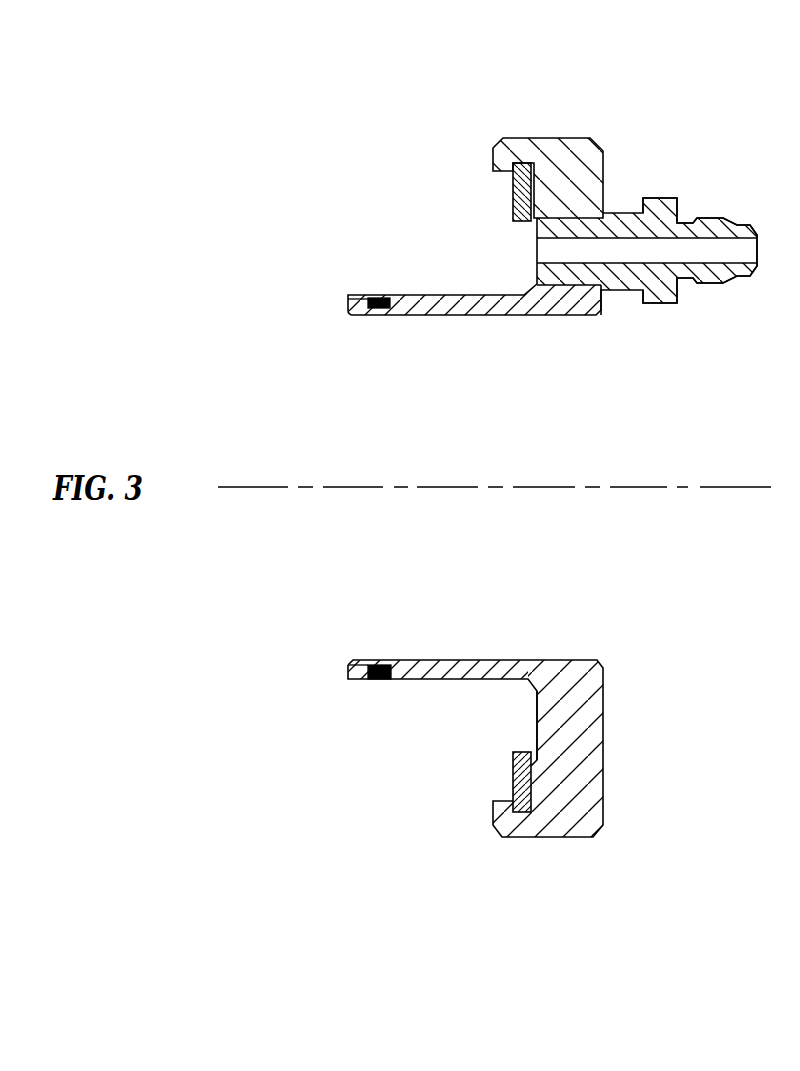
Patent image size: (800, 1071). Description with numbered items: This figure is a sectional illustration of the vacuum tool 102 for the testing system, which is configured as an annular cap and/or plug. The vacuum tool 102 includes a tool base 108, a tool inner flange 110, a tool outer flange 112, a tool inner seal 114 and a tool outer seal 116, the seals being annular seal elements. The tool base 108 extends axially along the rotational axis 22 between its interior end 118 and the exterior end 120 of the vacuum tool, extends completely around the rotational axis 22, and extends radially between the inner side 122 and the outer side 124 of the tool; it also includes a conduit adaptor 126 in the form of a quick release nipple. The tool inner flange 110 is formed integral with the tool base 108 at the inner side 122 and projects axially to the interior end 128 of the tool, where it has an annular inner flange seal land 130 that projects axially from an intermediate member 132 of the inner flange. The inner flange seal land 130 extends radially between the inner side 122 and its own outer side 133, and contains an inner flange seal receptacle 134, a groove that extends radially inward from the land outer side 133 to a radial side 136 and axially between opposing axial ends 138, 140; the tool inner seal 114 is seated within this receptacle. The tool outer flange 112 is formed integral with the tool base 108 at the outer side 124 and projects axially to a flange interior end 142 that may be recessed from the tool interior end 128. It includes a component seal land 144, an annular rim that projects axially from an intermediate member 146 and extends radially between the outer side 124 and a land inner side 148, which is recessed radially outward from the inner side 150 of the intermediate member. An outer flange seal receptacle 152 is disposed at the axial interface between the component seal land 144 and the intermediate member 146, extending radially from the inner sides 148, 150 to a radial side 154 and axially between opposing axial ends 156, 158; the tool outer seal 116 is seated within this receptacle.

The rotational axis 22 is at (757, 488).
The vacuum tool 102 is at (506, 477).
The tool base 108 is at (506, 495).
The tool inner flange 110 is at (467, 340).
The tool outer flange 112 is at (534, 482).
The tool inner seal 114 is at (377, 296).
The tool outer seal 116 is at (511, 200).
The interior end of the tool base 118 is at (537, 722).
The exterior end of the vacuum tool 120 is at (604, 695).
The inner side of the vacuum tool 122 is at (571, 316).
The outer side of the vacuum tool 124 is at (506, 136).
The conduit adaptor 126 is at (700, 302).
The interior end of the vacuum tool 128 is at (348, 672).
The inner flange seal land 130 is at (372, 320).
The intermediate member of the tool inner flange 132 is at (481, 320).
The outer side of the inner flange seal land 133 is at (352, 296).
The inner flange seal receptacle 134 is at (392, 296).
The radial side of the inner flange seal receptacle 136 is at (387, 316).
The axial end of the inner flange seal receptacle 138 is at (348, 307).
The axial end of the inner flange seal receptacle 140 is at (417, 316).
The interior end of the tool outer flange 142 is at (492, 152).
The component seal land 144 is at (489, 135).
The intermediate member of the tool outer flange 146 is at (530, 137).
The inner side of the component seal land 148 is at (496, 172).
The inner side of the intermediate member 150 is at (524, 222).
The outer flange seal receptacle 152 is at (533, 158).
The radial side of the outer flange seal receptacle 154 is at (526, 162).
The axial end of the outer flange seal receptacle 156 is at (490, 164).
The axial end of the outer flange seal receptacle 158 is at (537, 173).